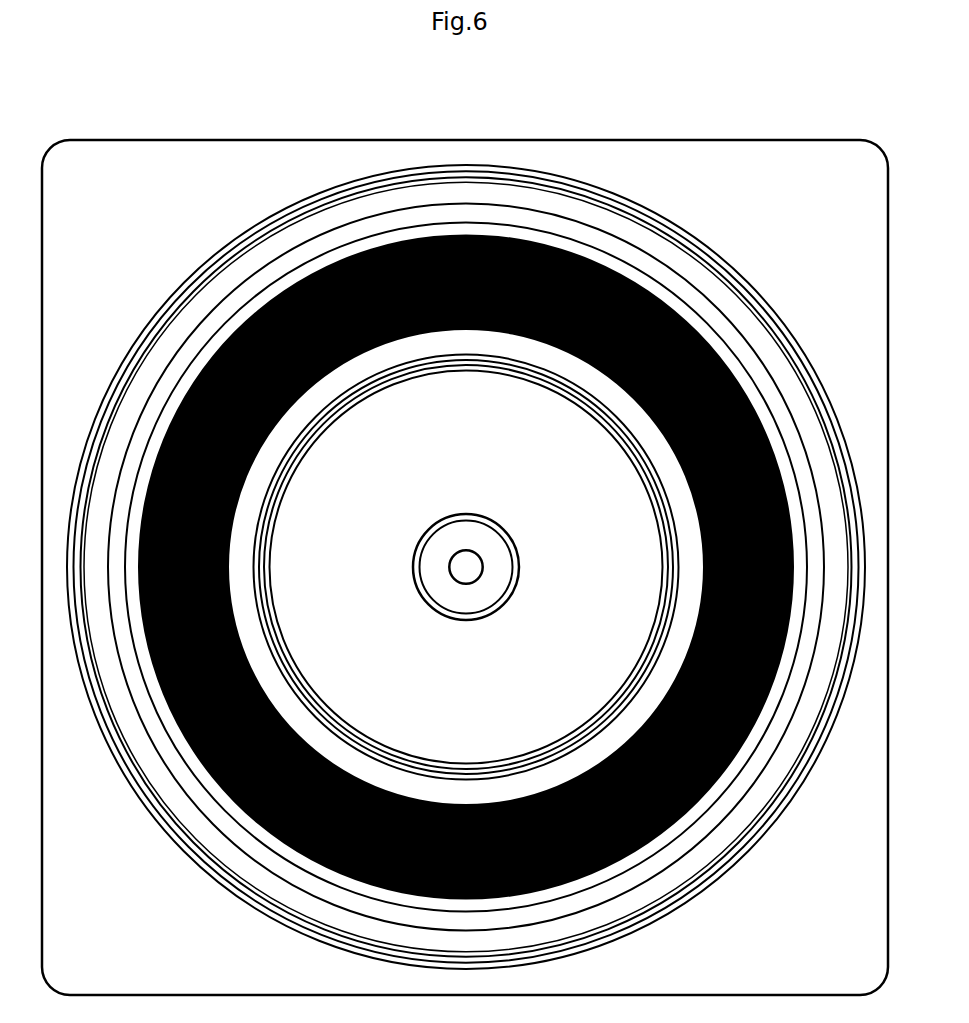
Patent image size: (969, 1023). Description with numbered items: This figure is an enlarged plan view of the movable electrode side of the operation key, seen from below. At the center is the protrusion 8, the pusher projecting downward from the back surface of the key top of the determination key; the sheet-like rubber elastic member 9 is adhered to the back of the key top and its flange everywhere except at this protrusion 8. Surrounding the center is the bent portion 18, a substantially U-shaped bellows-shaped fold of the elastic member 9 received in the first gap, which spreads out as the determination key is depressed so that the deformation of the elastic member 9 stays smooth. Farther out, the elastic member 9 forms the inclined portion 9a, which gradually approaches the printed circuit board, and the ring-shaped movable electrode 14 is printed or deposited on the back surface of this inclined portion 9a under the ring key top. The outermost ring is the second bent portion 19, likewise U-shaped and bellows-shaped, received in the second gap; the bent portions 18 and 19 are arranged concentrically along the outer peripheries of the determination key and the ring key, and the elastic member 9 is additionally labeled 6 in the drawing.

The sheet-like rubber elastic member 9 is at (713, 155).
The semiconductor disc 6 is at (465, 542).
The bent portion 19 is at (222, 249).
The inclined portion 9a is at (745, 383).
The ring-shaped movable electrode 14 is at (668, 298).
The bent portion 18 is at (320, 423).
The protrusion 8 is at (497, 593).